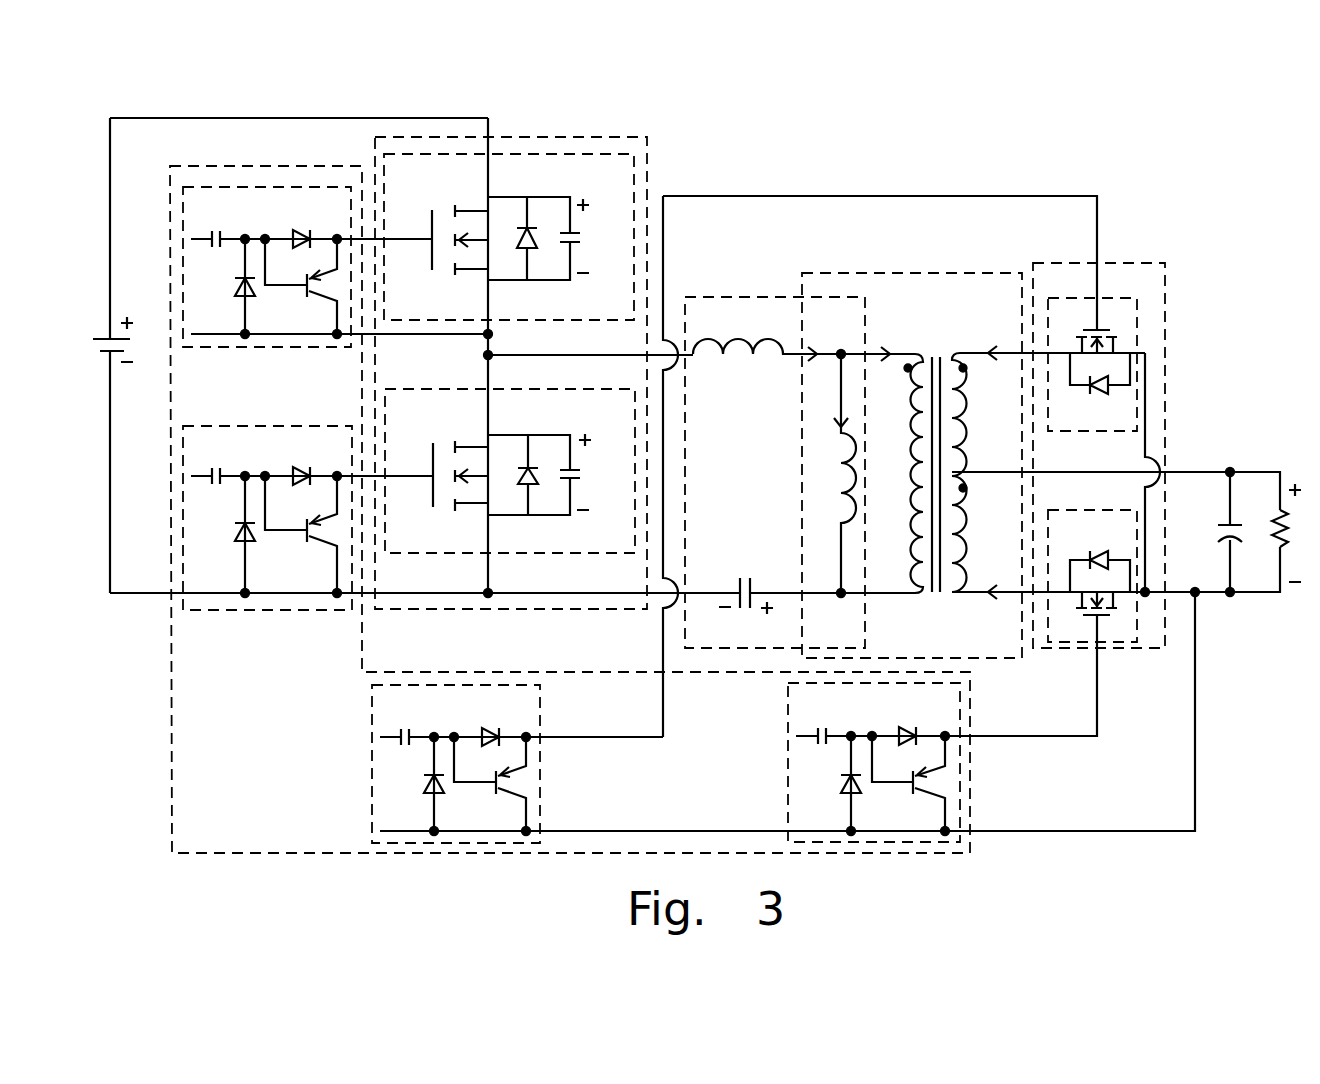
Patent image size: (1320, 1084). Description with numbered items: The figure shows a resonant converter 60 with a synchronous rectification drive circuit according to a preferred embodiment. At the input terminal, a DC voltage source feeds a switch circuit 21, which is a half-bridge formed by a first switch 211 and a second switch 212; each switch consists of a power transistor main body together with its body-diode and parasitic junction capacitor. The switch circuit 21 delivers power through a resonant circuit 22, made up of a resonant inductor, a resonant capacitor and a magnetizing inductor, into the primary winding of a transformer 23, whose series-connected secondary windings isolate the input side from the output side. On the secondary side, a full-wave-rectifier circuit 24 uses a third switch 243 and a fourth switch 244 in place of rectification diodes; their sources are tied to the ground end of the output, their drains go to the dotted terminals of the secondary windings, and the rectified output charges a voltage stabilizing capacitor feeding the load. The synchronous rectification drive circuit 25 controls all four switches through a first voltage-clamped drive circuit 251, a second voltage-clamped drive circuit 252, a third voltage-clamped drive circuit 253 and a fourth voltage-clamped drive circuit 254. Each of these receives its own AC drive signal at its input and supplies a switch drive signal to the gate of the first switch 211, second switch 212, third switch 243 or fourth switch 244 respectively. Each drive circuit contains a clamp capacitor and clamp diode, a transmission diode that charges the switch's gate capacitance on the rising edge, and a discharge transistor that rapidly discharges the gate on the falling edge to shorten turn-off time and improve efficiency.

The resonant converter 60 is at (874, 139).
The switch circuit 21 is at (615, 137).
The first switch 211 is at (507, 154).
The second switch 212 is at (450, 389).
The resonant circuit 22 is at (712, 297).
The transformer 23 is at (865, 273).
The full-wave-rectifier circuit 24 is at (1138, 263).
The third switch 243 is at (1138, 323).
The fourth switch 244 is at (1127, 643).
The synchronous rectification drive circuit 25 is at (217, 166).
The first voltage-clamped drive circuit 251 is at (287, 187).
The second voltage-clamped drive circuit 252 is at (227, 613).
The third voltage-clamped drive circuit 253 is at (372, 713).
The fourth voltage-clamped drive circuit 254 is at (788, 772).